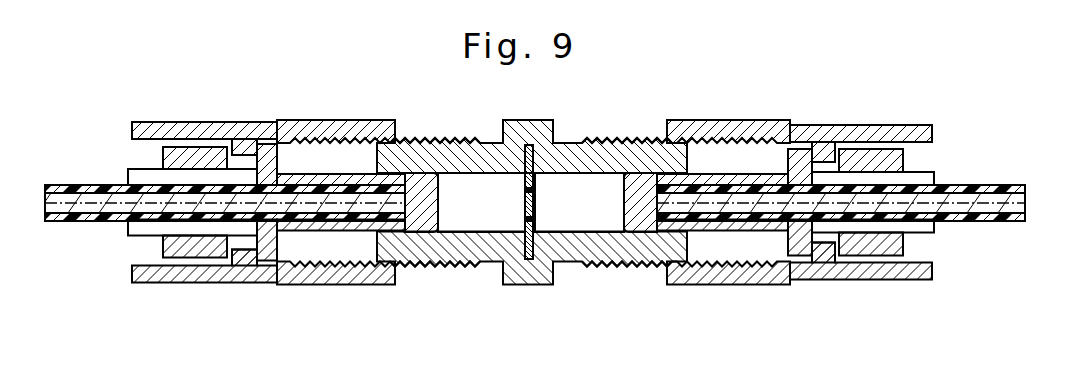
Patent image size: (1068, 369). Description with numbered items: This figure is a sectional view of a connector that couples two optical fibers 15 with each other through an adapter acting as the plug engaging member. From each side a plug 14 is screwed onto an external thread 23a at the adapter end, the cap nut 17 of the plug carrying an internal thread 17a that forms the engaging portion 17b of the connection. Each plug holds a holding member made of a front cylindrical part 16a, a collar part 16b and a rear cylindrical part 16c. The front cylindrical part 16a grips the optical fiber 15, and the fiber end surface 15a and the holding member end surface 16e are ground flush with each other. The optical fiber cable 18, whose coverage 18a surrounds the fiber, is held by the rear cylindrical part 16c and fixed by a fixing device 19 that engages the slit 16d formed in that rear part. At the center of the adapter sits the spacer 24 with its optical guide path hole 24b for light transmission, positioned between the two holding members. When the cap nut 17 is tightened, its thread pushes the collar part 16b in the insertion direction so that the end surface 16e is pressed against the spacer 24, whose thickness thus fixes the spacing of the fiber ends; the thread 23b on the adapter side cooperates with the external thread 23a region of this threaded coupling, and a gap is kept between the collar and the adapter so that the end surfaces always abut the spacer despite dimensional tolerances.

The plug 14 is at (333, 121).
The optical fiber 15 is at (415, 200).
The fiber end surface 15a is at (440, 203).
The front cylindrical part 16a is at (337, 231).
The collar part 16b is at (263, 253).
The rear cylindrical part 16c is at (133, 235).
The slit 16d is at (135, 169).
The holding member end surface 16e is at (453, 140).
The cap nut 17 is at (187, 122).
The internal thread 17a is at (243, 150).
The engaging portion 17b is at (767, 256).
The optical fiber cable 18 is at (978, 246).
The coverage 18a is at (52, 185).
The fixing device 19 is at (195, 256).
The external thread 23a is at (443, 269).
The thread 23b is at (415, 268).
The spacer 24 is at (525, 258).
The optical guide path hole 24b is at (532, 152).